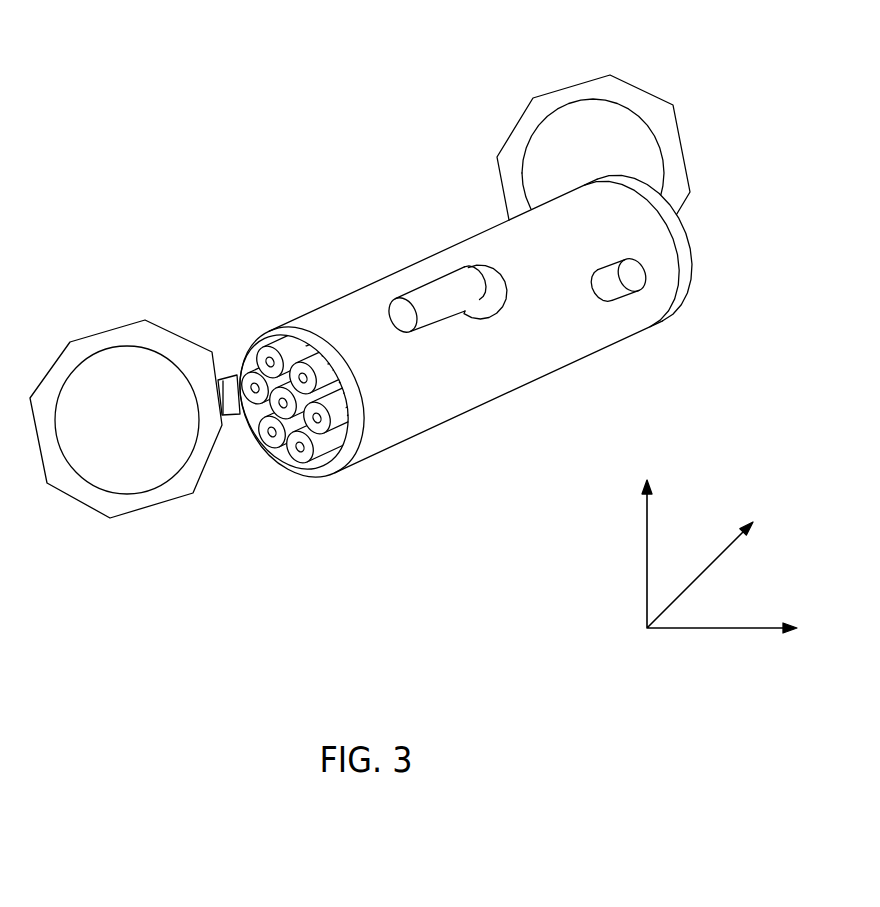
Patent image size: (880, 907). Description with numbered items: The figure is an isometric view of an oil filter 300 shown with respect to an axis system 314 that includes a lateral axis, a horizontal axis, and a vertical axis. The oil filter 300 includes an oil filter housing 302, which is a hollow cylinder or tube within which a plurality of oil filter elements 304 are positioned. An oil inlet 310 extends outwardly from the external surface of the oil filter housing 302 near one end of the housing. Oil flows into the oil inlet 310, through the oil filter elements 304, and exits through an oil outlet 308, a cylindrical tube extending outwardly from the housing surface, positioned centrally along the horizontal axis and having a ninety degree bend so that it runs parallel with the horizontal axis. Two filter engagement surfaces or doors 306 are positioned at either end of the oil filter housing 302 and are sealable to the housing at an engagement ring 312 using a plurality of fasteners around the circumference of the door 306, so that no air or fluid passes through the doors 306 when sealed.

The oil filter 300 is at (245, 108).
The oil filter housing 302 is at (568, 367).
The oil filter elements 304 is at (312, 452).
The doors 306 is at (83, 347).
The oil outlet 308 is at (443, 288).
The oil inlet 310 is at (625, 293).
The engagement ring 312 is at (287, 322).
The axis system 314 is at (696, 481).